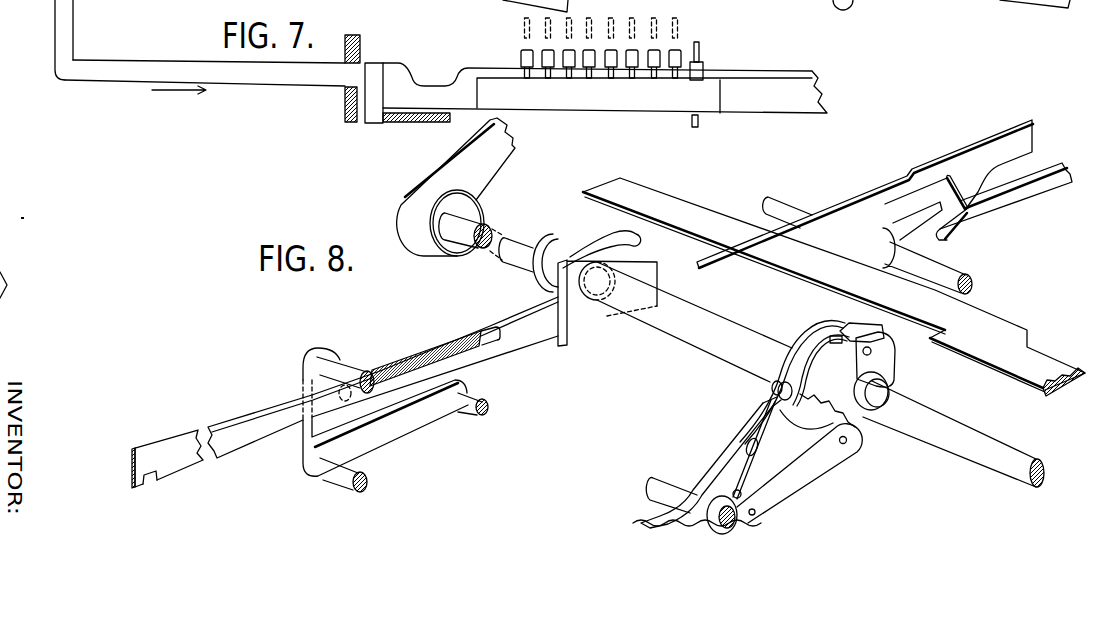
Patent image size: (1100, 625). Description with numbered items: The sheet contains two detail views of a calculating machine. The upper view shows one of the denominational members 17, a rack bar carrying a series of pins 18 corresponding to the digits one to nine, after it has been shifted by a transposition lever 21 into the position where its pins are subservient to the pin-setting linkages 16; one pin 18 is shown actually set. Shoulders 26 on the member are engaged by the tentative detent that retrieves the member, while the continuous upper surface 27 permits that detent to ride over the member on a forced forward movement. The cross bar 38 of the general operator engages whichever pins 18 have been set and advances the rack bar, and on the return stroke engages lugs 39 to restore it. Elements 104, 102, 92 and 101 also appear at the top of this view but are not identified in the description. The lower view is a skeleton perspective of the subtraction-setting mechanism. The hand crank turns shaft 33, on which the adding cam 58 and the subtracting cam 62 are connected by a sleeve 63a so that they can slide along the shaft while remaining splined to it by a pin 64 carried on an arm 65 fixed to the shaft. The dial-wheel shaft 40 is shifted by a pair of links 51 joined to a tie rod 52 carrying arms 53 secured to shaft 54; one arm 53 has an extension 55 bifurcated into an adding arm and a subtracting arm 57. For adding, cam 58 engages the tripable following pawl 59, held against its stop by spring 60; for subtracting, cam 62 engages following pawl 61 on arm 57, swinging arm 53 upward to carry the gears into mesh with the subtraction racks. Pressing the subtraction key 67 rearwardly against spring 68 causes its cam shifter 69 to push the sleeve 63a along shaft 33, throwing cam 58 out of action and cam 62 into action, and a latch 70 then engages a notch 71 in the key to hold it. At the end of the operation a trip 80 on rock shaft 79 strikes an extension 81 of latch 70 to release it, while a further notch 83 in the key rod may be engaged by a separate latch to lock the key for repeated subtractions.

In FIG. 7, the transposition lever 21 is at (70, 13).
In FIG. 7, the continuous upper surface 27 is at (263, 63).
In FIG. 7, the lug 39 is at (373, 117).
In FIG. 7, the cross bar 38 is at (410, 118).
In FIG. 8, the cross bar 38 is at (1060, 392).
In FIG. 7, the shoulder 26 is at (407, 73).
In FIG. 7, the denominational member 17 is at (703, 90).
In FIG. 7, the linkage 16 is at (588, 23).
In FIG. 7, the pin 18 is at (701, 49).
In FIG. 7, the lever 104 is at (604, 8).
In FIG. 7, the link 102 is at (862, 13).
In FIG. 7, the pivot 92 is at (867, 0).
In FIG. 7, the arm 101 is at (951, 10).
In FIG. 8, the shaft 33 is at (979, 433).
In FIG. 8, the cam shifter 69 is at (611, 242).
In FIG. 8, the notch 71 is at (958, 175).
In FIG. 8, the latch 70 is at (1003, 203).
In FIG. 8, the extension 81 is at (947, 238).
In FIG. 8, the rock shaft 79 is at (975, 275).
In FIG. 8, the trip 80 is at (921, 220).
In FIG. 8, the sleeve 63a is at (733, 327).
In FIG. 8, the cam 62 is at (792, 355).
In FIG. 8, the cam 58 is at (817, 382).
In FIG. 8, the pin 64 is at (884, 338).
In FIG. 8, the arm 65 is at (892, 367).
In FIG. 8, the following pawl 59 is at (770, 382).
In FIG. 8, the spring 60 is at (755, 449).
In FIG. 8, the subtracting arm 57 is at (808, 470).
In FIG. 8, the following pawl 61 is at (848, 450).
In FIG. 8, the extension 55 is at (755, 515).
In FIG. 8, the shaft 54 is at (486, 412).
In FIG. 8, the arm 53 is at (647, 527).
In FIG. 8, the tie rod 52 is at (356, 478).
In FIG. 8, the shaft 40 is at (347, 370).
In FIG. 8, the spring 68 is at (433, 347).
In FIG. 8, the link 51 is at (310, 378).
In FIG. 8, the subtraction key 67 is at (240, 440).
In FIG. 8, the notch 83 is at (153, 475).